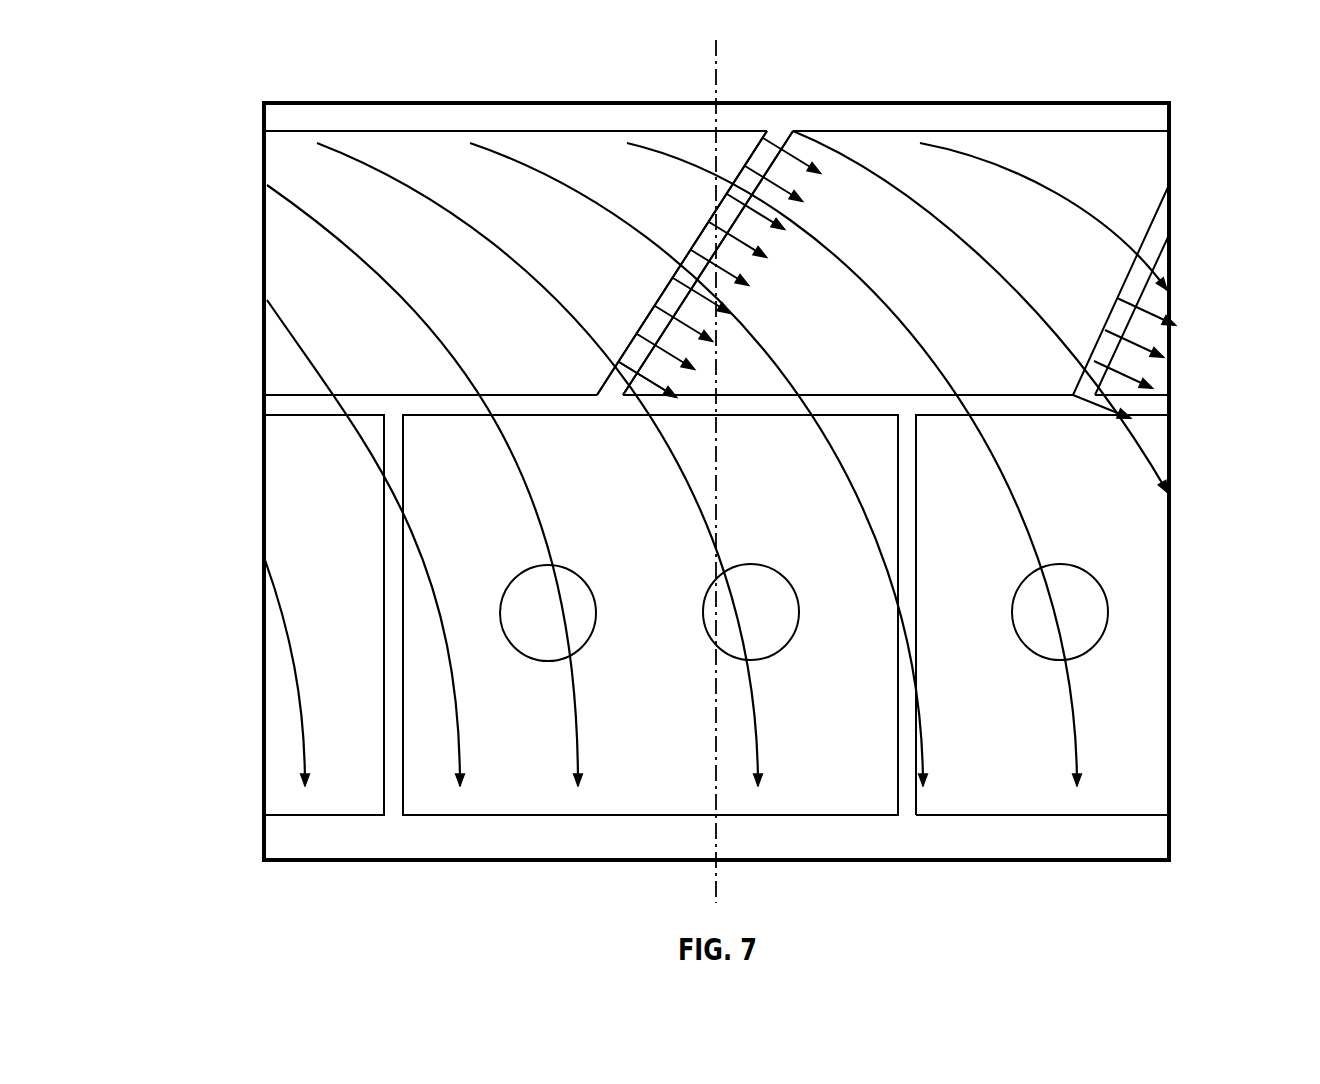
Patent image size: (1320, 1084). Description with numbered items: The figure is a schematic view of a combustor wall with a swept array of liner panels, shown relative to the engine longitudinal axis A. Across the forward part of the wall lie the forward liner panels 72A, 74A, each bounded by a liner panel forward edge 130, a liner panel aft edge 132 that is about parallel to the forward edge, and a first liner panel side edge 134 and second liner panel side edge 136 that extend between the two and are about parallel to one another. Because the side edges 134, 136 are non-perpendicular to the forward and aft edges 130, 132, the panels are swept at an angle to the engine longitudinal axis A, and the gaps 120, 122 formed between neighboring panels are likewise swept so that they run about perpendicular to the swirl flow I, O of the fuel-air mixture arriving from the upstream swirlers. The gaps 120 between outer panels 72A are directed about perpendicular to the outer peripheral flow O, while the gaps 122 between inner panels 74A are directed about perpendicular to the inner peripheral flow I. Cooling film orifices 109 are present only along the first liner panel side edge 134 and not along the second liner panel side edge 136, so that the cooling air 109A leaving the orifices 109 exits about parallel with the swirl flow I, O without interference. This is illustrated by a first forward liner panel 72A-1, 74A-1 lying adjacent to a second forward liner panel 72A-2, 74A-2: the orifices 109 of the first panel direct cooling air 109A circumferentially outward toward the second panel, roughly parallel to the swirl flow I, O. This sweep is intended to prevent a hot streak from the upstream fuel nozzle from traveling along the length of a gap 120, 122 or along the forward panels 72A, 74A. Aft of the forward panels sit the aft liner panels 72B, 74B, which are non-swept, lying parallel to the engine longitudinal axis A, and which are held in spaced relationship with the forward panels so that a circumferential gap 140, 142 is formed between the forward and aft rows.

The outer forward liner panel 72A is at (721, 462).
The inner forward liner panel 74A is at (302, 143).
The first forward liner panel 72A-1 is at (426, 464).
The first forward liner panel 74A-1 is at (307, 260).
The second forward liner panel 72A-2 is at (819, 417).
The second forward liner panel 74A-2 is at (867, 148).
The outer aft liner panel 72B is at (723, 652).
The inner aft liner panel 74B is at (305, 511).
The liner panel forward edge 130 is at (1052, 158).
The liner panel aft edge 132 is at (913, 400).
The first liner panel side edge 134 is at (1167, 340).
The second liner panel side edge 136 is at (666, 294).
The cooling film orifices 109 is at (723, 203).
The cooling air 109A is at (784, 235).
The gap 120 is at (641, 263).
The gap 122 is at (658, 320).
The circumferential gap 140 is at (625, 421).
The circumferential gap 142 is at (703, 410).
The inner peripheral swirl flow I is at (932, 464).
The outer peripheral swirl flow O is at (1077, 733).
The engine longitudinal axis A is at (715, 88).